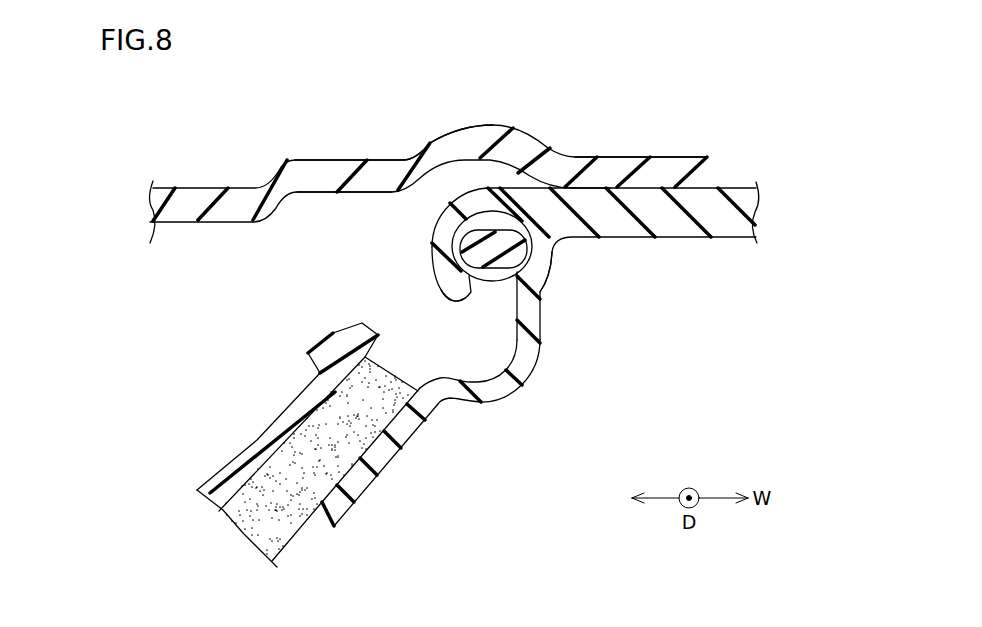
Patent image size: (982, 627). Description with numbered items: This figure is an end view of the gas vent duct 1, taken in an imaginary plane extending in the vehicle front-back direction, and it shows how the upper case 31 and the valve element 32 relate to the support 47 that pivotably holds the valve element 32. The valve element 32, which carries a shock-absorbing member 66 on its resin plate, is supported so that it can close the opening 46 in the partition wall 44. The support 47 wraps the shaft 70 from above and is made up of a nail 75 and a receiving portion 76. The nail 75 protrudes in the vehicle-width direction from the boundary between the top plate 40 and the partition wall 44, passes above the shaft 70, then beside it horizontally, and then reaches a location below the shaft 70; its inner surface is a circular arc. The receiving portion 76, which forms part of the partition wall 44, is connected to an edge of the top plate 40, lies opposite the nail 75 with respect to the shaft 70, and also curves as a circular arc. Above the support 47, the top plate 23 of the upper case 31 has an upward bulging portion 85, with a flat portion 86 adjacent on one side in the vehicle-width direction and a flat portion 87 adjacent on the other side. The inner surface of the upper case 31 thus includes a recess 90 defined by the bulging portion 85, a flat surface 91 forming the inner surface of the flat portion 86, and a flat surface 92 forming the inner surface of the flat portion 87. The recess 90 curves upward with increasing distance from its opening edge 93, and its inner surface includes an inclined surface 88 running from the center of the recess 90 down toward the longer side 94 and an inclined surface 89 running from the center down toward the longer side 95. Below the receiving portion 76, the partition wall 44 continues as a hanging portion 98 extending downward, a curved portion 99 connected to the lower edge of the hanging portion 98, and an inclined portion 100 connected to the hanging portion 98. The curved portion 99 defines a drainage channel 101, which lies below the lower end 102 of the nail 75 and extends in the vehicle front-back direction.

The gas vent duct 1 is at (702, 93).
The top plate 23 is at (195, 197).
The upper case 31 is at (430, 156).
The valve element 32 is at (307, 400).
The top plate 40 is at (724, 187).
The partition wall 44 is at (507, 424).
The opening 46 is at (323, 506).
The support 47 is at (451, 274).
The shock-absorbing member 66 is at (243, 533).
The shaft 70 is at (460, 248).
The nail 75 is at (443, 283).
The receiving portion 76 is at (551, 267).
The bulging portion 85 is at (427, 147).
The flat portion 86 is at (316, 160).
The flat portion 87 is at (665, 164).
The inclined surface 88 is at (470, 170).
The inclined surface 89 is at (518, 174).
The recess 90 is at (540, 80).
The flat surface 91 is at (354, 196).
The flat surface 92 is at (630, 196).
The opening edge 93 is at (449, 131).
The longer side 94 is at (393, 197).
The longer side 95 is at (584, 196).
The hanging portion 98 is at (537, 313).
The curved portion 99 is at (515, 388).
The inclined portion 100 is at (389, 461).
The drainage channel 101 is at (500, 372).
The lower end 102 is at (457, 303).